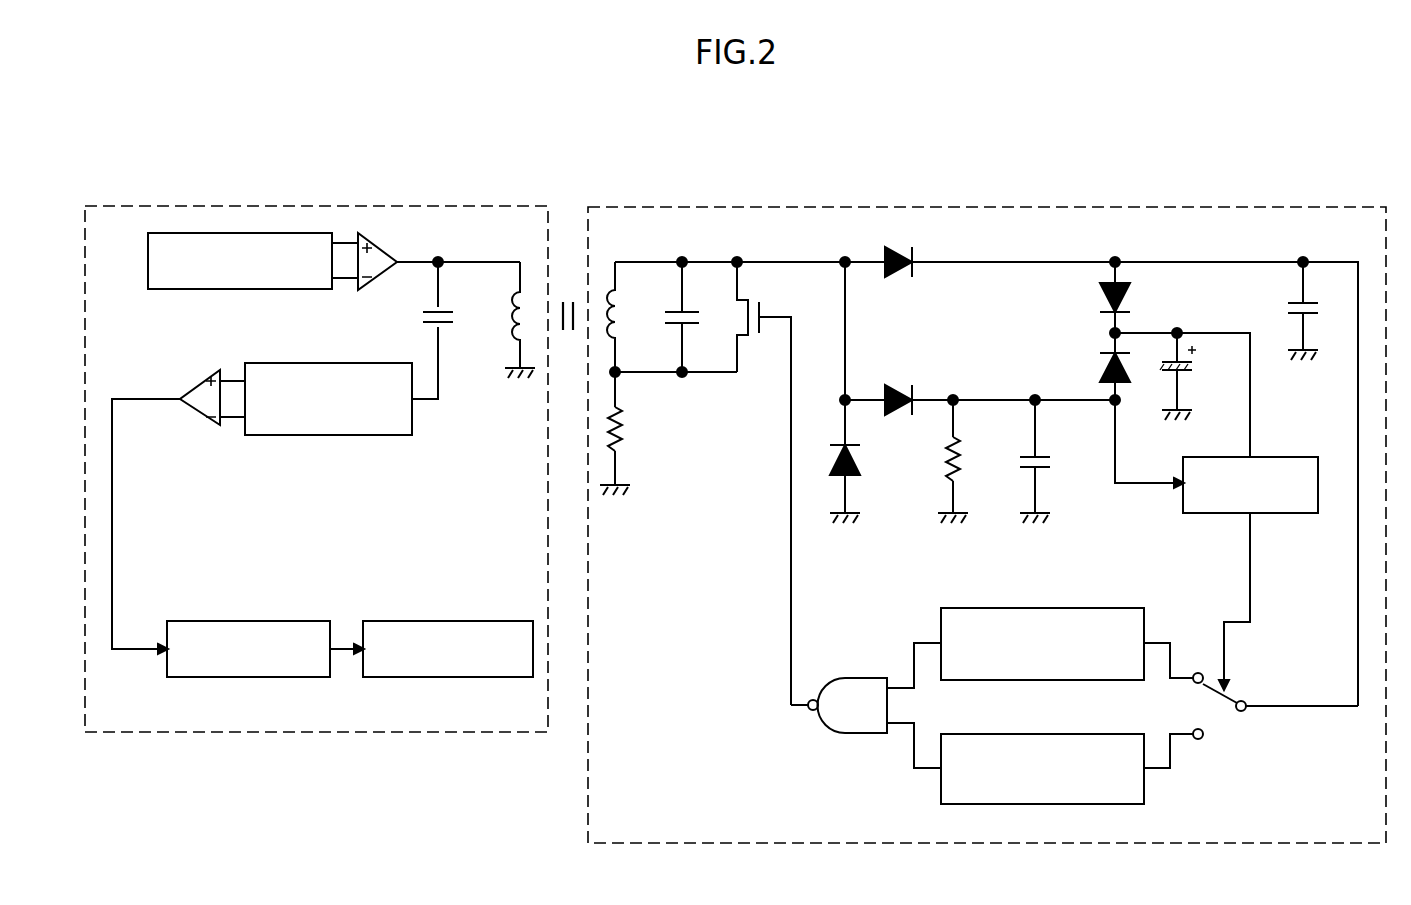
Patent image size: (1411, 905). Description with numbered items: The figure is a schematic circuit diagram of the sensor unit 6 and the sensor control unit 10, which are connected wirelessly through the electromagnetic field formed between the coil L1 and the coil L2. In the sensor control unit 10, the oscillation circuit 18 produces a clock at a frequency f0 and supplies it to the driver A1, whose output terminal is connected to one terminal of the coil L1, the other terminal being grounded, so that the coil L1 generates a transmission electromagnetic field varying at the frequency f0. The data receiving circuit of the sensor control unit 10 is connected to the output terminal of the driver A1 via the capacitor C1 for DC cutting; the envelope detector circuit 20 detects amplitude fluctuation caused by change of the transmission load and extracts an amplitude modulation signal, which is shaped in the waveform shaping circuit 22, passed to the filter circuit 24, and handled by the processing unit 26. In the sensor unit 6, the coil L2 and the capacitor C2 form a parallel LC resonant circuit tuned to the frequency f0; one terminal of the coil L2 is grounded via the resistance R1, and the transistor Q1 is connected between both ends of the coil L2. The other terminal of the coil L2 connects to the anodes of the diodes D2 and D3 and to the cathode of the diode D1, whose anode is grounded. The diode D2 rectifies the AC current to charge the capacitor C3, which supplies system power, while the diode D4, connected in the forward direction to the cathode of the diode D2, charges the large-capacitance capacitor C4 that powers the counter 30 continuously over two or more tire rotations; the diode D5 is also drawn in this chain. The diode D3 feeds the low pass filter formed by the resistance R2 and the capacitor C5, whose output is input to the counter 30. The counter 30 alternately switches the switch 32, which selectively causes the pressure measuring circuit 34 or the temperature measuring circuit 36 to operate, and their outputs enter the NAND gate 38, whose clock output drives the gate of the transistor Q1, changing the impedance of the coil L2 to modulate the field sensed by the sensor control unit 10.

The sensor control unit 10 is at (357, 206).
The sensor unit 6 is at (1252, 207).
The oscillation circuit 18 is at (190, 289).
The driver A1 is at (426, 254).
The capacitor C1 is at (417, 328).
The coil L1 is at (508, 320).
The envelope detector circuit 20 is at (383, 435).
The waveform shaping circuit 22 is at (202, 413).
The filter circuit 24 is at (277, 621).
The processing unit 26 is at (453, 621).
The coil L2 is at (628, 317).
The capacitor C2 is at (693, 317).
The transistor Q1 is at (768, 483).
The resistance R1 is at (633, 433).
The diode D1 is at (832, 469).
The diode D2 is at (898, 247).
The diode D3 is at (980, 387).
The resistance R2 is at (936, 461).
The capacitor C5 is at (1054, 461).
The diode D4 is at (1094, 300).
The diode D5 is at (1094, 366).
The capacitor C4 is at (1182, 392).
The capacitor C3 is at (1287, 311).
The counter 30 is at (1280, 513).
The NAND gate 38 is at (852, 678).
The pressure measuring circuit 34 is at (1088, 608).
The temperature measuring circuit 36 is at (1144, 790).
The switch 32 is at (1224, 722).